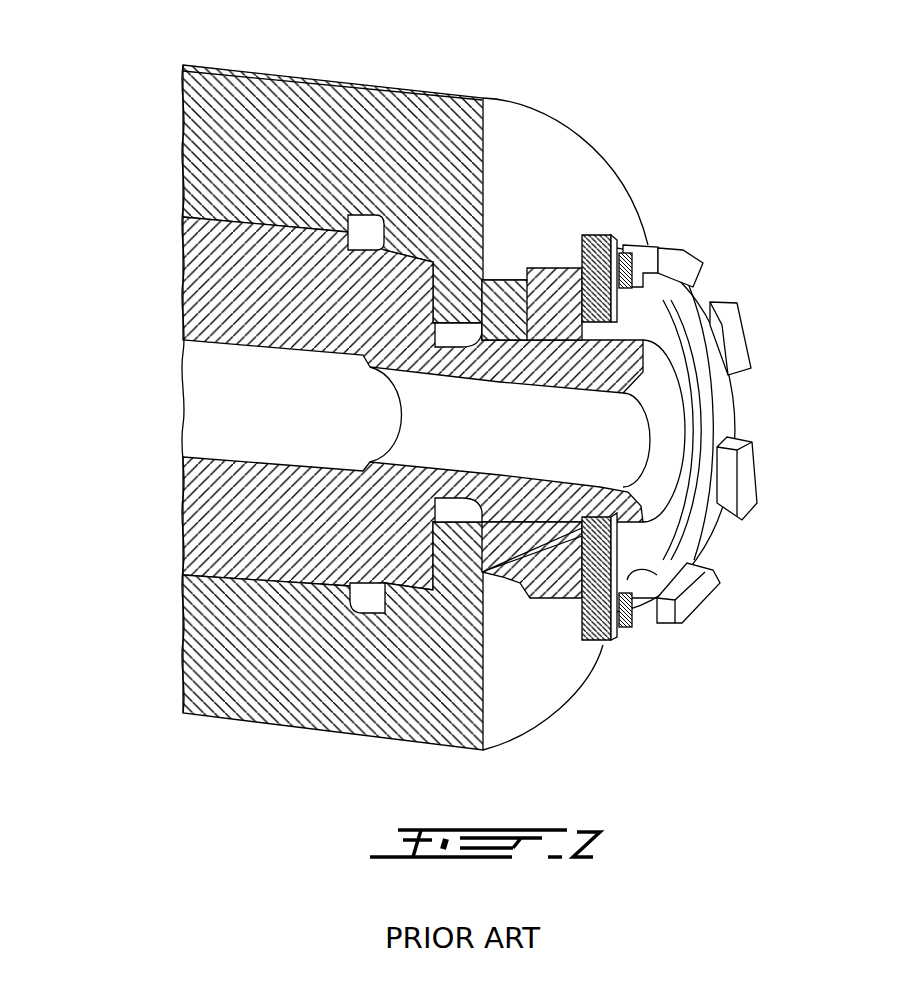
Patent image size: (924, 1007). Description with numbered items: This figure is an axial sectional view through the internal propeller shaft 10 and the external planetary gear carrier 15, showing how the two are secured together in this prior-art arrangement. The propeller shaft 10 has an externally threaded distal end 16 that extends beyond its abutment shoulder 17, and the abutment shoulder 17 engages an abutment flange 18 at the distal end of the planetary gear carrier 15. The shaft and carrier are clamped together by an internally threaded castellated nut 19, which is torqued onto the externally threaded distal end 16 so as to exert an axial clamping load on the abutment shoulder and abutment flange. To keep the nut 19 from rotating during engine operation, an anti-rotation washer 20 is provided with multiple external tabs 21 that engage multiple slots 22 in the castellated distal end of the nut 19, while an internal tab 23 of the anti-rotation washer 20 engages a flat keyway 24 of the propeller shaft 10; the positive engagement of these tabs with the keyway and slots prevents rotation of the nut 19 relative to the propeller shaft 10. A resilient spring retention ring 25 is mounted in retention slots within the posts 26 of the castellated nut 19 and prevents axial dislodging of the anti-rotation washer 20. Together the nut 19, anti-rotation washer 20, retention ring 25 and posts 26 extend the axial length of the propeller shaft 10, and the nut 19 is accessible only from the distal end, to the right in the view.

The propeller shaft 10 is at (250, 523).
The planetary gear carrier 15 is at (243, 653).
The externally threaded distal end 16 is at (537, 370).
The abutment shoulder 17 is at (433, 297).
The abutment flange 18 is at (455, 290).
The castellated nut 19 is at (530, 310).
The anti-rotation washer 20 is at (582, 600).
The external tabs 21 is at (597, 233).
The slots 22 is at (712, 290).
The internal tab 23 is at (482, 572).
The flat keyway 24 is at (600, 477).
The resilient spring retention ring 25 is at (640, 607).
The posts 26 is at (755, 340).